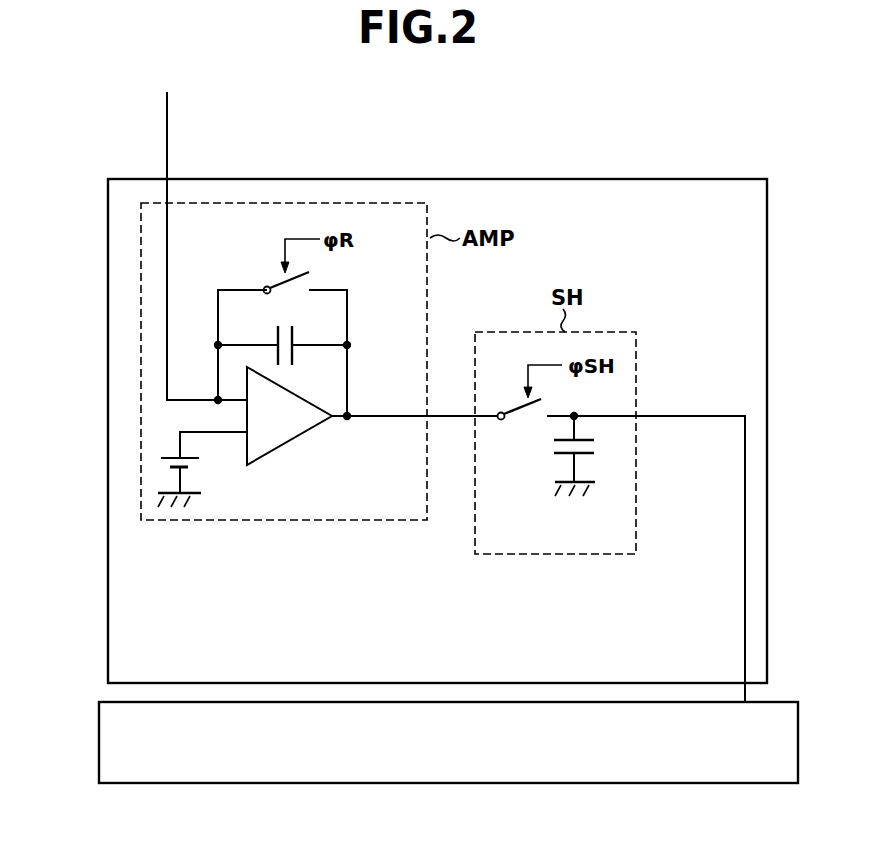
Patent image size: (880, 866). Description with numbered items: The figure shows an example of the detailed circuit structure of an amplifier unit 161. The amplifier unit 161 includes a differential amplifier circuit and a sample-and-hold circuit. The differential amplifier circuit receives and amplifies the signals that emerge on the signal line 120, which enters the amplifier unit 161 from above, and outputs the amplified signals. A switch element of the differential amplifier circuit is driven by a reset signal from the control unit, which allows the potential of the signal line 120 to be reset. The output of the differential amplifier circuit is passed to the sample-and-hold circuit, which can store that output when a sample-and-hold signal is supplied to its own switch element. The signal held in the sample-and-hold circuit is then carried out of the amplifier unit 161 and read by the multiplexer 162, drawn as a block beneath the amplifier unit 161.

The signal line 120 is at (167, 132).
The amplifier unit 161 is at (108, 651).
The multiplexer 162 is at (99, 742).